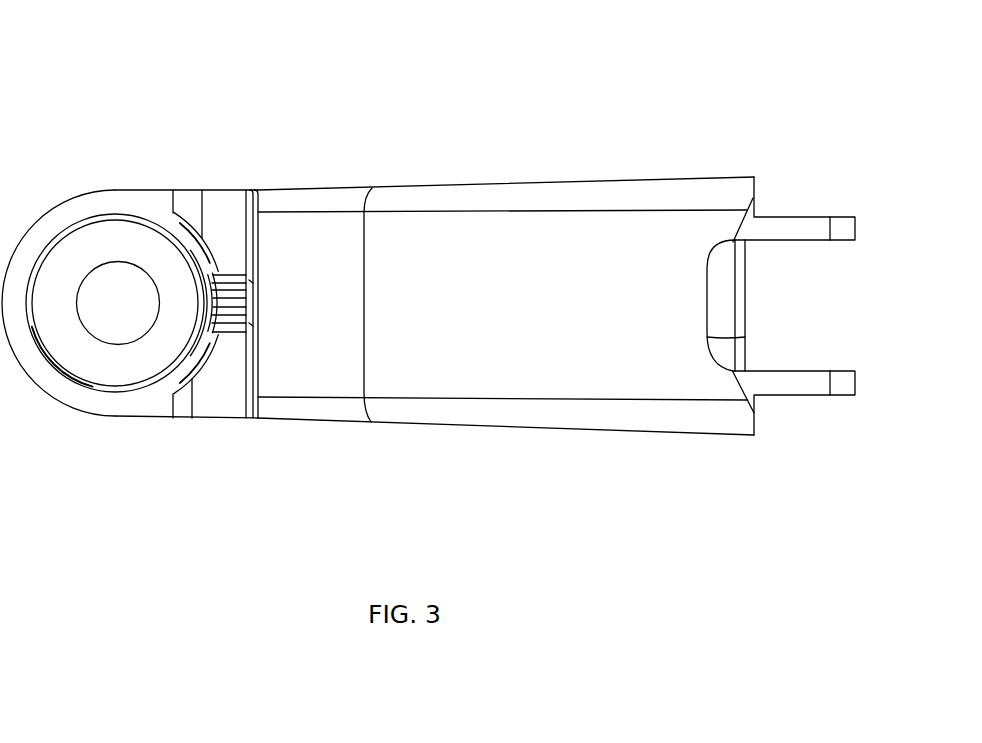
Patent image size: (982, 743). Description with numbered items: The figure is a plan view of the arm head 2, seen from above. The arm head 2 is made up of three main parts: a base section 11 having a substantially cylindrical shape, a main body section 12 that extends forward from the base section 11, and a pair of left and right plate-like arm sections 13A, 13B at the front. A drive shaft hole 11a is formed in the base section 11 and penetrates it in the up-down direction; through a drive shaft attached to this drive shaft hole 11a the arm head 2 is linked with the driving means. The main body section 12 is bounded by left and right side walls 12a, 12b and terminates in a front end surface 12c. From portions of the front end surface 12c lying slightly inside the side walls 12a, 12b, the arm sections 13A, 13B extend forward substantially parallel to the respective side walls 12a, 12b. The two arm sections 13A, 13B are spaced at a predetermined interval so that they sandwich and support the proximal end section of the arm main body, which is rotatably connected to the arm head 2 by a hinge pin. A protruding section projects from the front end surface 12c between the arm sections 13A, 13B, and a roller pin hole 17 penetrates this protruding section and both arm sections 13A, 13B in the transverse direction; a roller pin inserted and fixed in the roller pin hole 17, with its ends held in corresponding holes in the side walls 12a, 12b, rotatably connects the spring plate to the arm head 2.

The arm head 2 is at (583, 133).
The base section 11 is at (70, 198).
The drive shaft hole 11a is at (96, 272).
The main body section 12 is at (464, 257).
The side wall 12a is at (577, 430).
The side wall 12b is at (647, 180).
The front end surface 12c is at (707, 337).
The arm section 13A is at (800, 396).
The arm section 13B is at (817, 213).
The roller pin hole 17 is at (747, 293).